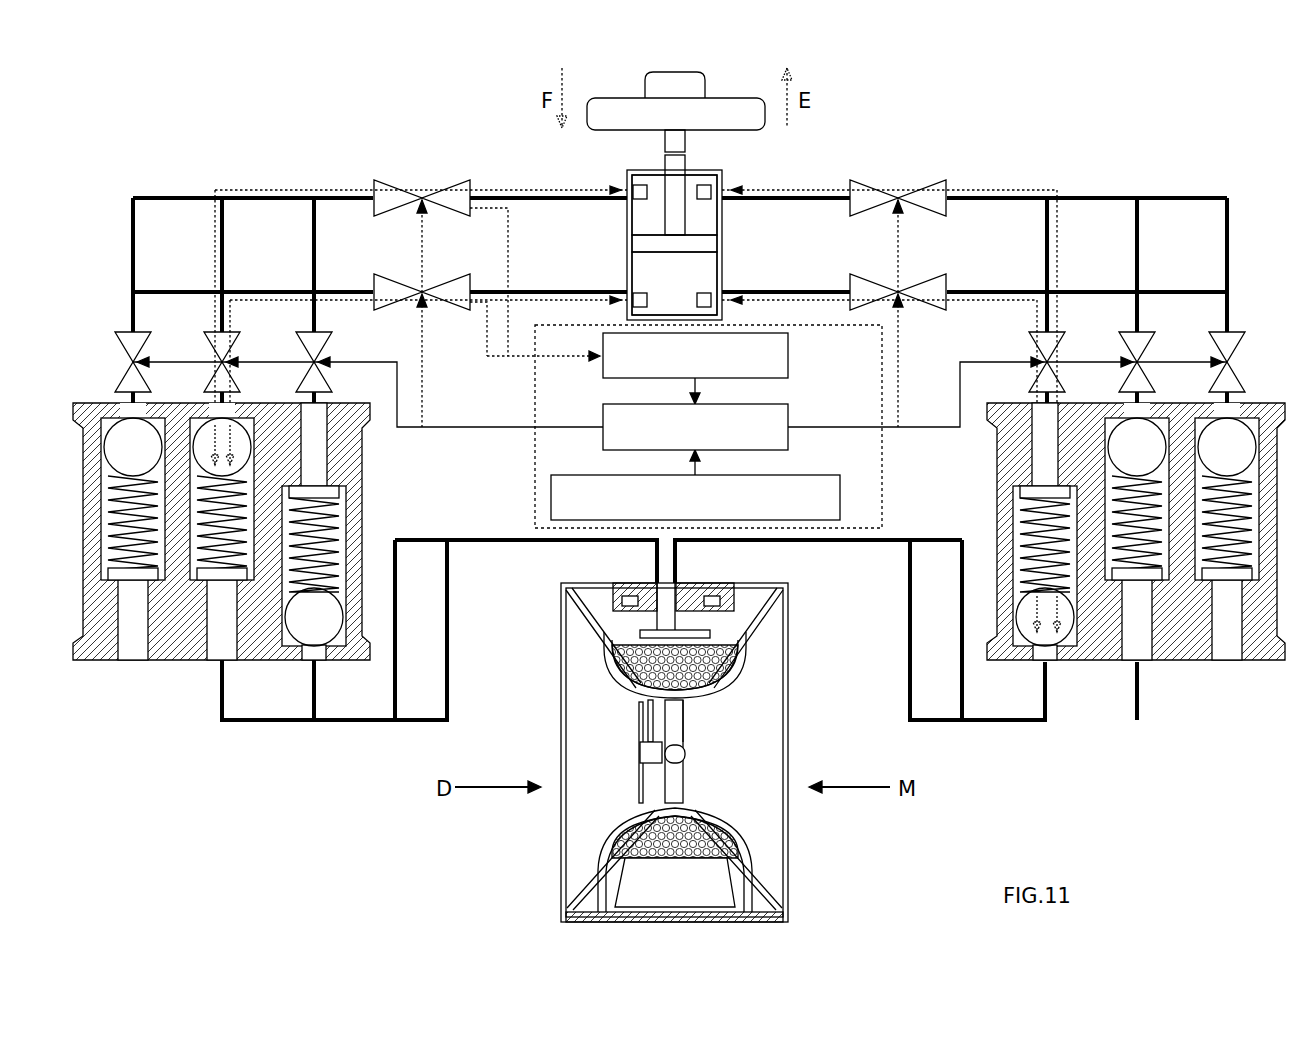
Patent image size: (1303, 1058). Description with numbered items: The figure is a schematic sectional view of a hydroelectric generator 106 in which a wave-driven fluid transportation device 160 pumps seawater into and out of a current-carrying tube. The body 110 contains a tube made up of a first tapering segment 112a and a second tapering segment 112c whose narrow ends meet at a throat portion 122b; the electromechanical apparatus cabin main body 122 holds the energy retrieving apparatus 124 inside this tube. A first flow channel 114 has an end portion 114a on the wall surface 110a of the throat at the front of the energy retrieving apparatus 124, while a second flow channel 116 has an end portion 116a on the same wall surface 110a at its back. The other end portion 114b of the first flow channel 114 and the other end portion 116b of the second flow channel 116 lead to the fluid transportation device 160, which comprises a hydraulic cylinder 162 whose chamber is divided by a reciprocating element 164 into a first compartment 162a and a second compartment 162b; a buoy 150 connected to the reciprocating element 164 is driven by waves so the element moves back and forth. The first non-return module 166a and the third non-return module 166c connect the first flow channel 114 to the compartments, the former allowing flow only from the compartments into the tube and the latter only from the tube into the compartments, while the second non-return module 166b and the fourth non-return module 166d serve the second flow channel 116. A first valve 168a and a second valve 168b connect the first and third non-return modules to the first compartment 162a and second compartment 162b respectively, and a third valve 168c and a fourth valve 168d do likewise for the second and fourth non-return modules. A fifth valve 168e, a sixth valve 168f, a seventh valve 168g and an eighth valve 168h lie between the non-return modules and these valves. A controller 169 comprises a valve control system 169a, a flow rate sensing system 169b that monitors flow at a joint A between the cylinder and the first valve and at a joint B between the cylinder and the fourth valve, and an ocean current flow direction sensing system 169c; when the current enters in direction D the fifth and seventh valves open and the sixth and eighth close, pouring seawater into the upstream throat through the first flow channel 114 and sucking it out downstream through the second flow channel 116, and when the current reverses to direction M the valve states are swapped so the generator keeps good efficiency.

The hydroelectric generator 106 is at (1196, 152).
The body 110 is at (775, 865).
The wall surface 110a is at (645, 752).
The first tapering segment 112a is at (600, 804).
The second tapering segment 112c is at (756, 694).
The first flow channel 114 is at (596, 610).
The end portion of the first flow channel 114a is at (652, 722).
The other end portion of the first flow channel 114b is at (648, 574).
The second flow channel 116 is at (754, 610).
The end portion of the second flow channel 116a is at (690, 722).
The other end portion of the second flow channel 116b is at (686, 574).
The electromechanical apparatus cabin main body 122 is at (650, 868).
The throat portion 122b is at (695, 790).
The energy retrieving apparatus 124 is at (675, 770).
The buoy 150 is at (735, 108).
The fluid transportation device 160 is at (835, 160).
The hydraulic cylinder 162 is at (720, 235).
The first compartment 162a is at (702, 222).
The second compartment 162b is at (652, 278).
The reciprocating element 164 is at (632, 245).
The joint A is at (640, 182).
The joint B is at (710, 290).
The first non-return module 166a is at (250, 650).
The second non-return module 166b is at (1080, 650).
The third non-return module 166c is at (365, 470).
The fourth non-return module 166d is at (1170, 650).
The first valve 168a is at (382, 188).
The second valve 168b is at (373, 285).
The third valve 168c is at (935, 182).
The fourth valve 168d is at (935, 278).
The fifth valve 168e is at (212, 330).
The sixth valve 168f is at (320, 348).
The seventh valve 168g is at (1032, 352).
The eighth valve 168h is at (1110, 346).
The controller 169 is at (884, 480).
The valve control system 169a is at (790, 412).
The flow rate sensing system 169b is at (790, 356).
The ocean current flow direction sensing system 169c is at (795, 478).